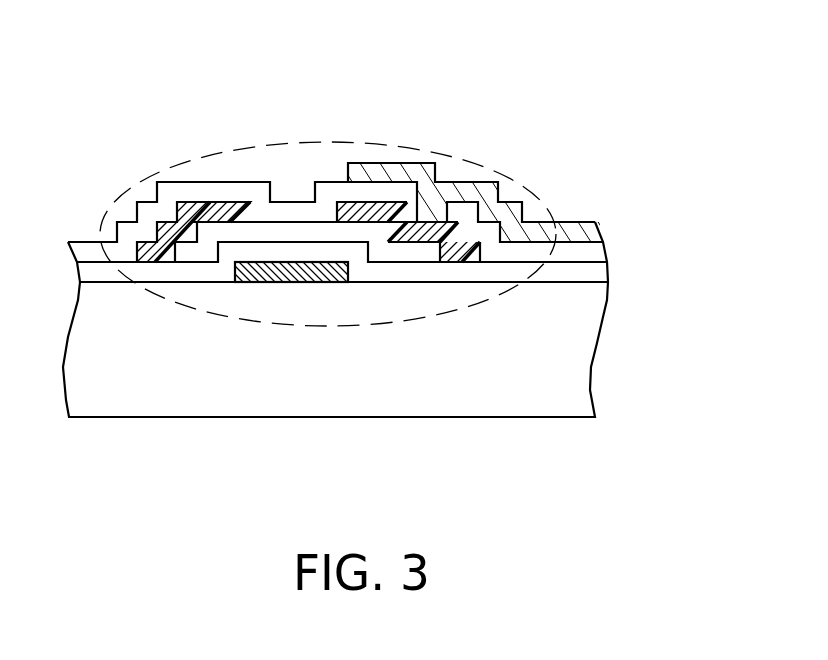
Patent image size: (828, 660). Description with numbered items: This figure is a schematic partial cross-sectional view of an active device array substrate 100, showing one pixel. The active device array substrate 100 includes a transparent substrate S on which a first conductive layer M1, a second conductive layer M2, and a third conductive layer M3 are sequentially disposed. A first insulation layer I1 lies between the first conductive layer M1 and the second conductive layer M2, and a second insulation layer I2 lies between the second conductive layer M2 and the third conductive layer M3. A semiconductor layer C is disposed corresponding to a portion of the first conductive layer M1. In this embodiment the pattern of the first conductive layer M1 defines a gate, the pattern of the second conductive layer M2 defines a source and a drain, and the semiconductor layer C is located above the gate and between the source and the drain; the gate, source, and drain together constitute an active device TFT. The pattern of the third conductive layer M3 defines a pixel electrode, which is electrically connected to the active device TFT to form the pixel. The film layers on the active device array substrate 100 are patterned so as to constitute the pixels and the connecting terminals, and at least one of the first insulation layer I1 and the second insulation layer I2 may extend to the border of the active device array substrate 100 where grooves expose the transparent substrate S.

The active device array substrate 100 is at (376, 274).
The transparent substrate S is at (580, 347).
The first conductive layer M1 is at (283, 275).
The first insulation layer I1 is at (597, 272).
The second conductive layer M2 is at (205, 203).
The second insulation layer I2 is at (597, 252).
The third conductive layer M3 is at (470, 195).
The semiconductor layer C is at (292, 233).
The active device TFT is at (370, 320).